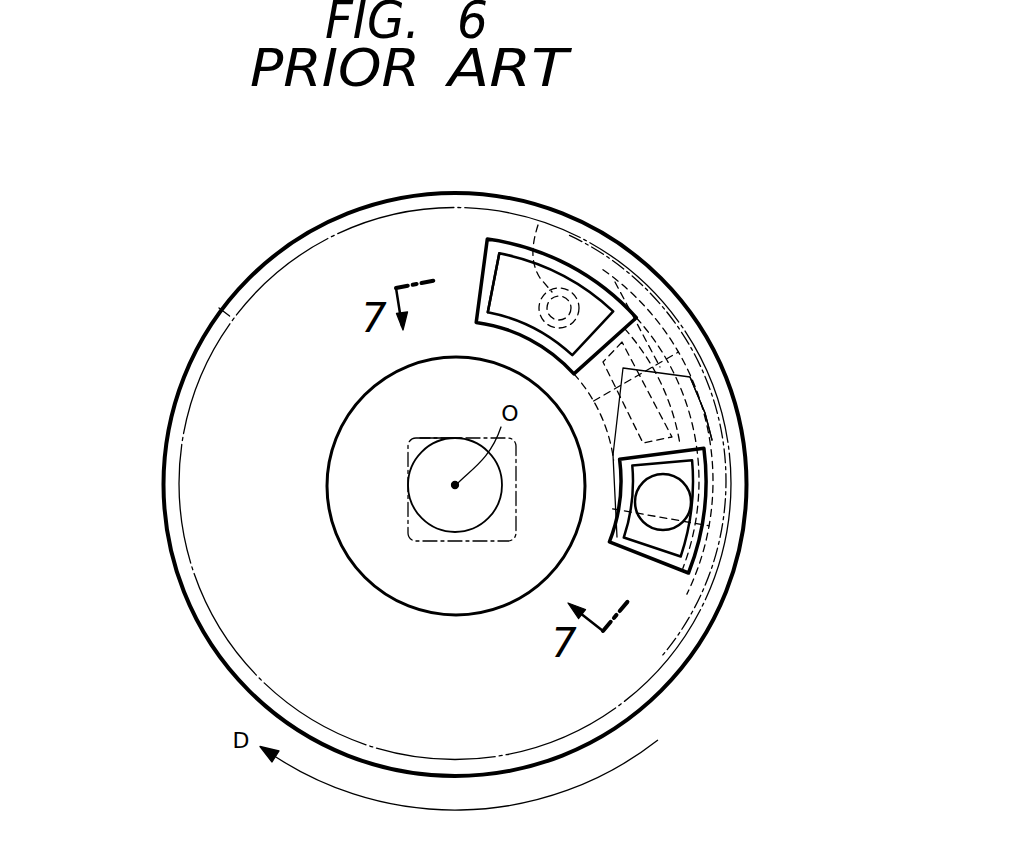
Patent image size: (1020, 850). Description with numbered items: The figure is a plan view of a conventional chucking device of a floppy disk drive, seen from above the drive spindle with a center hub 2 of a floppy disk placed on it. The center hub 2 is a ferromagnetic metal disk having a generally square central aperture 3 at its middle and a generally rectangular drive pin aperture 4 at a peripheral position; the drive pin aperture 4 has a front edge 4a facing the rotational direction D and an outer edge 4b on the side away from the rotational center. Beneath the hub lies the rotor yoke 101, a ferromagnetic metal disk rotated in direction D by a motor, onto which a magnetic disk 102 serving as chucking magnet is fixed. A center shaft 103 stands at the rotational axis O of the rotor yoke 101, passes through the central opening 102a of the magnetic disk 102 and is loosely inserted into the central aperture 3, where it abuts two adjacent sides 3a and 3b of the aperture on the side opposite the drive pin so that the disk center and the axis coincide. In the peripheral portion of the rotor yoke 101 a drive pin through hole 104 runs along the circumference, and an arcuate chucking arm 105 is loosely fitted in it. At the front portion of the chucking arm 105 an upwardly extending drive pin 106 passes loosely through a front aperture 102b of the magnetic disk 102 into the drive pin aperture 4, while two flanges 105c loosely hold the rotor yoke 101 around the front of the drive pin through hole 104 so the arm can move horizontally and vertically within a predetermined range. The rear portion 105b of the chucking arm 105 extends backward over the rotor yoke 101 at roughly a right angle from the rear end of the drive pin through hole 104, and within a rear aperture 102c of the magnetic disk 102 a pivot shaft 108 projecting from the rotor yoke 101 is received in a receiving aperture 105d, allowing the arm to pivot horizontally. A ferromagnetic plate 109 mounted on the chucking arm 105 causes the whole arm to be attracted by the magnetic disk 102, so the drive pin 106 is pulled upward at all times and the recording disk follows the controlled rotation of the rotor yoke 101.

The center hub 2 is at (217, 308).
The central aperture 3 is at (408, 525).
The side of central aperture 3a is at (408, 472).
The side of central aperture 3b is at (432, 438).
The drive pin aperture 4 is at (683, 365).
The front edge 4a is at (617, 537).
The outer edge 4b is at (700, 463).
The rotor yoke 101 is at (164, 434).
The magnetic disk 102 is at (202, 520).
The central opening 102a is at (342, 487).
The front aperture 102b is at (672, 552).
The rear aperture 102c is at (476, 322).
The center shaft 103 is at (477, 507).
The drive pin through hole 104 is at (683, 303).
The chucking arm 105 is at (592, 290).
The rear portion 105b is at (515, 270).
The flanges 105c is at (667, 548).
The receiving aperture 105d is at (538, 225).
The drive pin 106 is at (678, 507).
The pivot shaft 108 is at (566, 288).
The ferromagnetic plate 109 is at (712, 386).